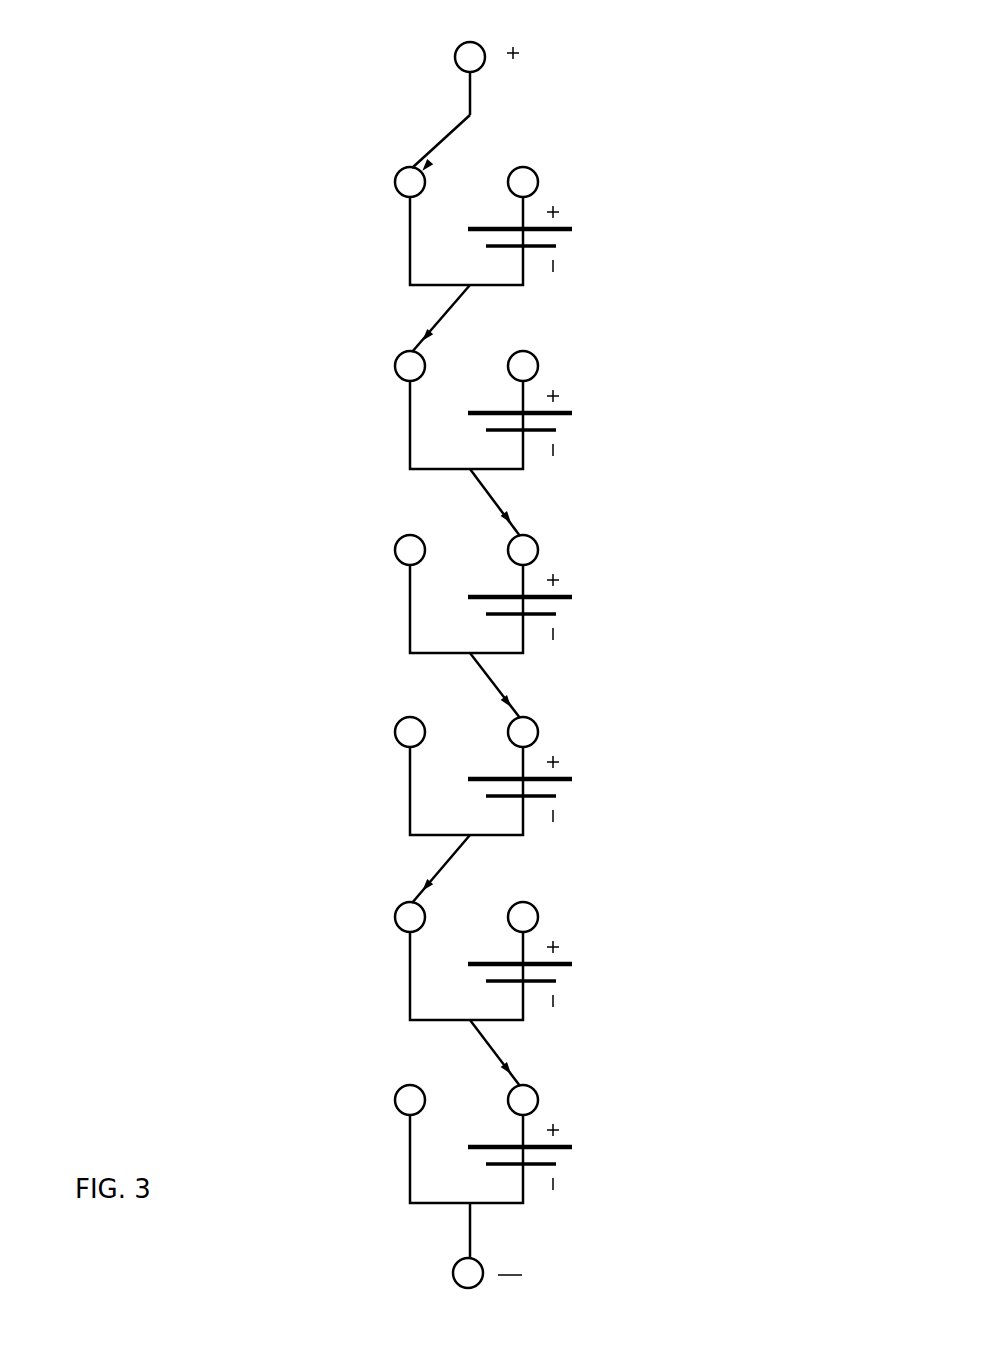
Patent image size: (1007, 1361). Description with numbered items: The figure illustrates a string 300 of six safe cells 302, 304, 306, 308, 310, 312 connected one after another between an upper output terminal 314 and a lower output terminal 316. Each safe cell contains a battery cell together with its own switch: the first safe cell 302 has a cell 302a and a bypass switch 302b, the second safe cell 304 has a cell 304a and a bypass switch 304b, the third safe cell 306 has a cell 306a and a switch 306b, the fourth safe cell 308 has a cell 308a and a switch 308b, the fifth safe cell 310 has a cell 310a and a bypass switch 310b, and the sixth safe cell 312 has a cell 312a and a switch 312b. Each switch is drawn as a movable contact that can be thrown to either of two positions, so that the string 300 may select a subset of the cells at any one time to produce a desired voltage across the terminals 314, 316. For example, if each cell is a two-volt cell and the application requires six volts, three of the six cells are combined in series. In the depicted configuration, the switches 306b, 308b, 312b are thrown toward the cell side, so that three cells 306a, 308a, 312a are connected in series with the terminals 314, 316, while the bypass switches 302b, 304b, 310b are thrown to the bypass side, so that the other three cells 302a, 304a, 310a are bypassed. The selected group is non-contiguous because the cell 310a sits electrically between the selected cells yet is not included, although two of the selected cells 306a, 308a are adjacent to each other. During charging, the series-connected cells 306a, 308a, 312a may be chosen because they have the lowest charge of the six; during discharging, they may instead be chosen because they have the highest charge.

The string of safe cells 300 is at (158, 122).
The safe cell 302 is at (562, 198).
The cell 302a is at (570, 232).
The bypass switch 302b is at (437, 142).
The safe cell 304 is at (562, 382).
The cell 304a is at (568, 414).
The bypass switch 304b is at (448, 322).
The safe cell 306 is at (562, 561).
The cell 306a is at (565, 596).
The switch 306b is at (497, 502).
The safe cell 308 is at (562, 753).
The cell 308a is at (567, 777).
The switch 308b is at (490, 688).
The safe cell 310 is at (562, 931).
The cell 310a is at (570, 964).
The bypass switch 310b is at (447, 873).
The safe cell 312 is at (562, 1123).
The cell 312a is at (568, 1147).
The switch 312b is at (497, 1050).
The output terminal 314 is at (472, 58).
The output terminal 316 is at (472, 1275).